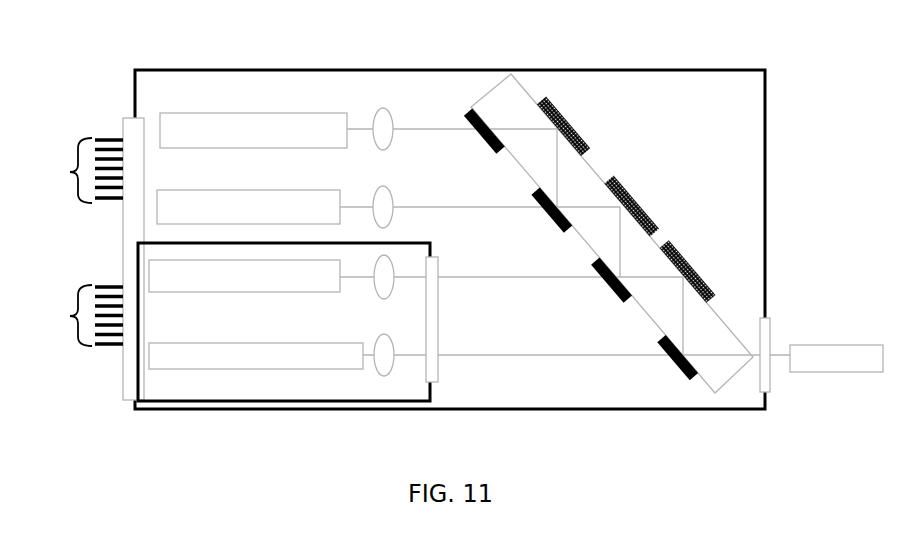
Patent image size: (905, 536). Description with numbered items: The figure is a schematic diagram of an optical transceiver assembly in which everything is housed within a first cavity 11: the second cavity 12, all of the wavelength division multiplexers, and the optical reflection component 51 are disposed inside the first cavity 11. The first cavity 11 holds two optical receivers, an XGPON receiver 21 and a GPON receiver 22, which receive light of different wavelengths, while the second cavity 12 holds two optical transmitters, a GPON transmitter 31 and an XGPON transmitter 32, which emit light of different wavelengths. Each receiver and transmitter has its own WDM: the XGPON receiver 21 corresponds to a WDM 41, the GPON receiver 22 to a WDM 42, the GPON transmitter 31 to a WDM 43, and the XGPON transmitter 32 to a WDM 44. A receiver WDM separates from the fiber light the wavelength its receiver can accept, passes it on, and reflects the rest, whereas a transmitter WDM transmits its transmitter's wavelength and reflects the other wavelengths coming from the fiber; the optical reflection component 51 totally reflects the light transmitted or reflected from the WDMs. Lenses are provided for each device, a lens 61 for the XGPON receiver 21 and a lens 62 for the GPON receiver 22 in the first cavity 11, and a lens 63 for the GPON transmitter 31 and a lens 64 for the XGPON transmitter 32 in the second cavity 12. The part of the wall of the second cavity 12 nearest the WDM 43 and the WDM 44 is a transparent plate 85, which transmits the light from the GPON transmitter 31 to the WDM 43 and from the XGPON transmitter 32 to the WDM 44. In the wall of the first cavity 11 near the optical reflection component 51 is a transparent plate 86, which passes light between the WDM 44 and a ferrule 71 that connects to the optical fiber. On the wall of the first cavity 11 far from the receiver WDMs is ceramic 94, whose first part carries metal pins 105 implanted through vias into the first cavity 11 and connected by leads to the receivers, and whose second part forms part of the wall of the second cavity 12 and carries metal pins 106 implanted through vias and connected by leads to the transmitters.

The first cavity 11 is at (450, 221).
The second cavity 12 is at (284, 343).
The XGPON receiver 21 is at (242, 148).
The GPON receiver 22 is at (282, 188).
The GPON transmitter 31 is at (247, 295).
The XGPON transmitter 32 is at (253, 342).
The WDM 41 is at (478, 133).
The WDM 42 is at (548, 210).
The WDM 43 is at (605, 280).
The WDM 44 is at (672, 358).
The optical reflection component 51 is at (649, 200).
The lens 61 is at (384, 149).
The lens 62 is at (380, 192).
The lens 63 is at (387, 297).
The lens 64 is at (382, 334).
The ferrule 71 is at (836, 345).
The transparent plate 85 is at (438, 372).
The transparent plate 86 is at (772, 375).
The ceramic 94 is at (122, 122).
The metal pins 105 is at (64, 172).
The metal pins 106 is at (64, 316).